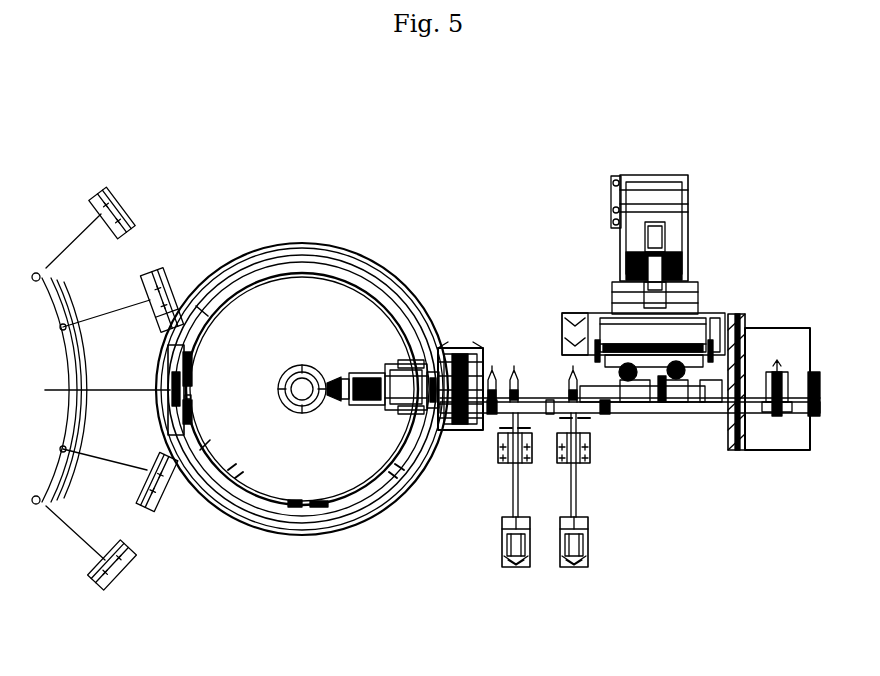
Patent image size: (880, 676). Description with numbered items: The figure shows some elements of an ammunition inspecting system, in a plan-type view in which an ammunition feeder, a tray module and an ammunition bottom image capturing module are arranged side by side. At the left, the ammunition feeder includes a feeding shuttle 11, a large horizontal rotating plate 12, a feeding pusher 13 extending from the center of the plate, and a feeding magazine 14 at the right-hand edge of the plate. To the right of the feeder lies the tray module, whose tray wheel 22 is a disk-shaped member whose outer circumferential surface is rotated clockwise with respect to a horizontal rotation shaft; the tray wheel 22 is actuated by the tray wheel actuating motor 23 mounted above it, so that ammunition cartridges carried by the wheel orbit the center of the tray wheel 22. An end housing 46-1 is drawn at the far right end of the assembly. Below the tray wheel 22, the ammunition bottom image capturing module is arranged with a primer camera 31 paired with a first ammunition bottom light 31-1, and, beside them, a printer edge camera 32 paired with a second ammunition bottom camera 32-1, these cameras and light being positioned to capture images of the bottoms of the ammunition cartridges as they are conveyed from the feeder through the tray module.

The feeding shuttle 11 is at (158, 268).
The horizontal rotating plate 12 is at (300, 243).
The feeding pusher 13 is at (400, 437).
The feeding magazine 14 is at (462, 348).
The tray wheel 22 is at (705, 418).
The tray wheel actuating motor 23 is at (688, 205).
The end housing 46-1 is at (760, 328).
The primer camera 31 is at (530, 553).
The first ammunition bottom light 31-1 is at (498, 450).
The printer edge camera 32 is at (588, 542).
The second ammunition bottom camera 32-1 is at (590, 450).